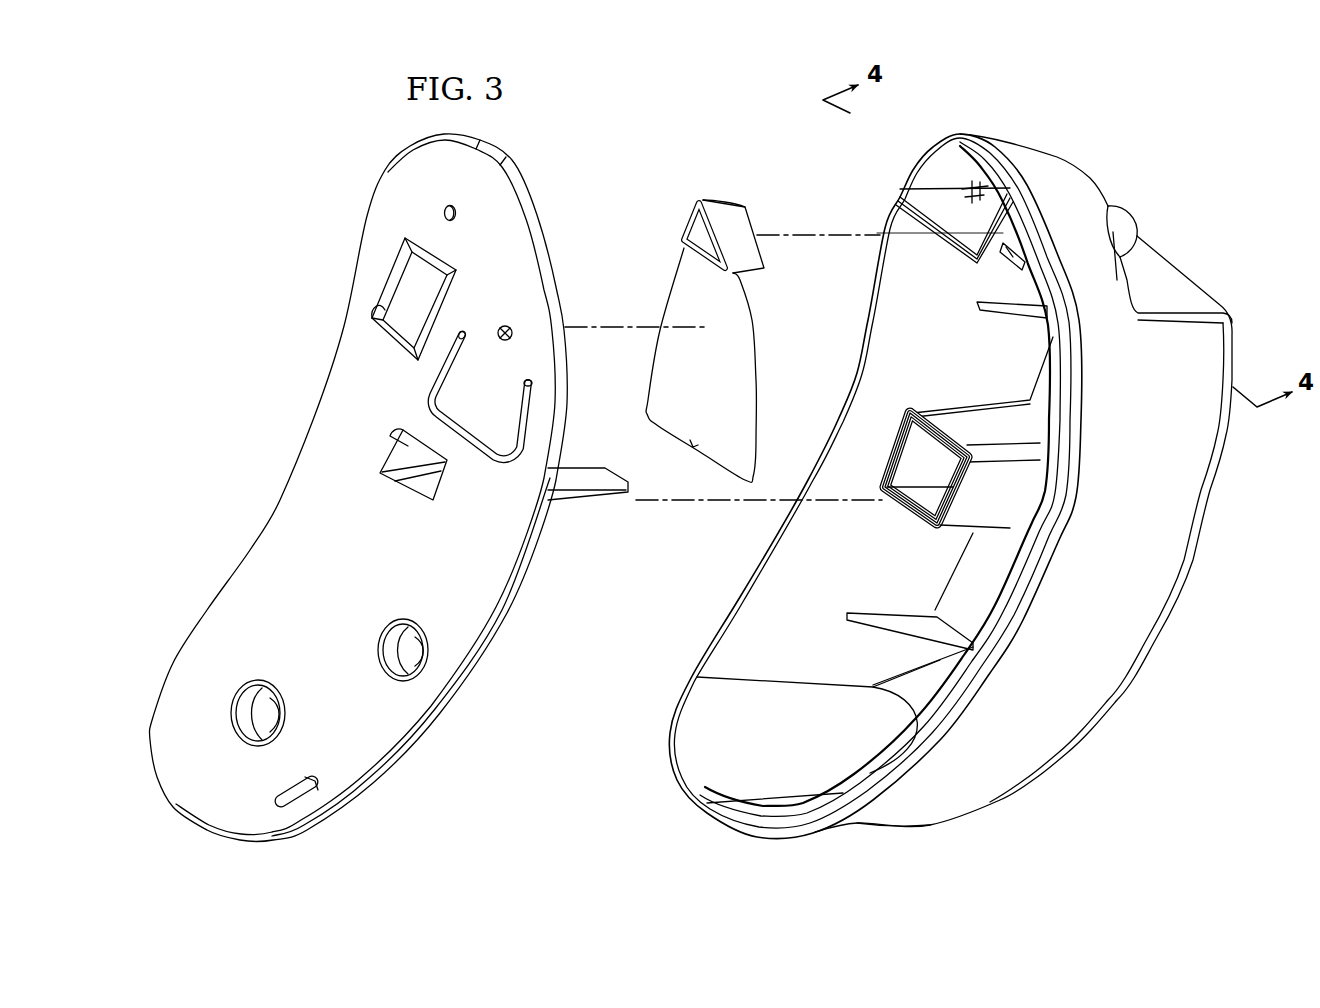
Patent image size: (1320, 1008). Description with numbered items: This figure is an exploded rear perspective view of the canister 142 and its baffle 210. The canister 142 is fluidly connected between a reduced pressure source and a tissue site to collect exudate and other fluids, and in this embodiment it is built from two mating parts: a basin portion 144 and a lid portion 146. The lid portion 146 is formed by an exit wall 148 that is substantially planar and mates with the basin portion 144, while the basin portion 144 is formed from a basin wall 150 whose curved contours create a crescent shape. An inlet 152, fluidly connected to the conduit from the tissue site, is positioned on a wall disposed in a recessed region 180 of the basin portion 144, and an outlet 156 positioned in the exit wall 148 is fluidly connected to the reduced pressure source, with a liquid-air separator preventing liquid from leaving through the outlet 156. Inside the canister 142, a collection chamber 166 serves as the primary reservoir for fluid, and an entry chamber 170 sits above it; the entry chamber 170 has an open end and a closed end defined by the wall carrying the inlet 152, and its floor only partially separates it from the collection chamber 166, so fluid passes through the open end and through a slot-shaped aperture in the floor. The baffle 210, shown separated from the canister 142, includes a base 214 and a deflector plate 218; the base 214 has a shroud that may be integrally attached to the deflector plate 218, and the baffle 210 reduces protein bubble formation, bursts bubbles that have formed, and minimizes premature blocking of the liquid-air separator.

The canister 142 is at (1199, 554).
The basin portion 144 is at (1157, 633).
The lid portion 146 is at (388, 488).
The exit wall 148 is at (267, 552).
The basin wall 150 is at (923, 808).
The inlet 152 is at (1143, 230).
The outlet 156 is at (507, 326).
The collection chamber 166 is at (801, 562).
The entry chamber 170 is at (998, 220).
The recessed region 180 is at (967, 506).
The baffle 210 is at (696, 307).
The base 214 is at (745, 228).
The deflector plate 218 is at (670, 422).